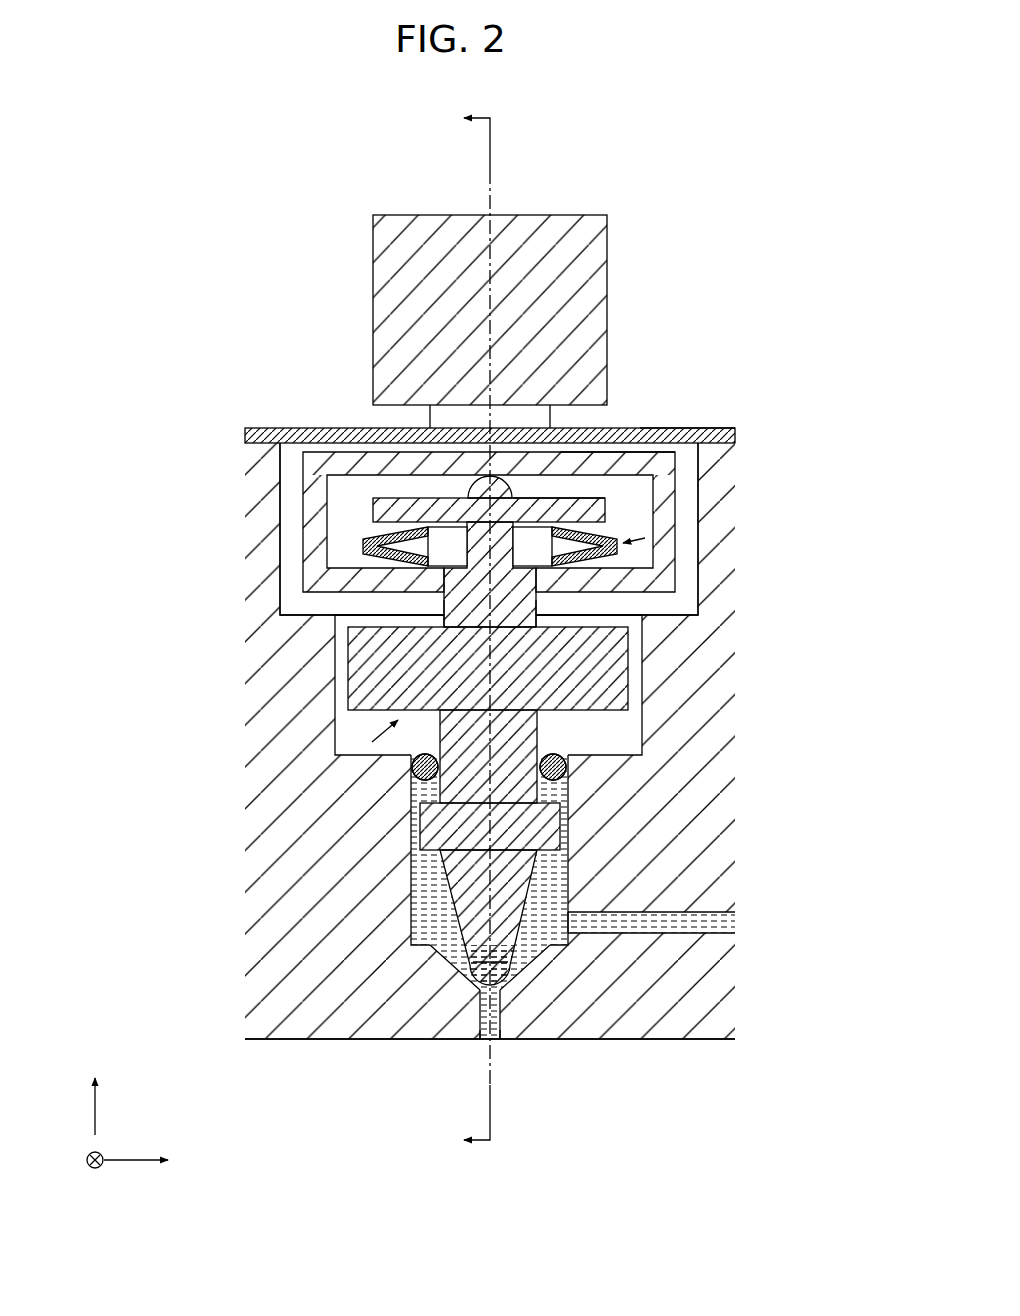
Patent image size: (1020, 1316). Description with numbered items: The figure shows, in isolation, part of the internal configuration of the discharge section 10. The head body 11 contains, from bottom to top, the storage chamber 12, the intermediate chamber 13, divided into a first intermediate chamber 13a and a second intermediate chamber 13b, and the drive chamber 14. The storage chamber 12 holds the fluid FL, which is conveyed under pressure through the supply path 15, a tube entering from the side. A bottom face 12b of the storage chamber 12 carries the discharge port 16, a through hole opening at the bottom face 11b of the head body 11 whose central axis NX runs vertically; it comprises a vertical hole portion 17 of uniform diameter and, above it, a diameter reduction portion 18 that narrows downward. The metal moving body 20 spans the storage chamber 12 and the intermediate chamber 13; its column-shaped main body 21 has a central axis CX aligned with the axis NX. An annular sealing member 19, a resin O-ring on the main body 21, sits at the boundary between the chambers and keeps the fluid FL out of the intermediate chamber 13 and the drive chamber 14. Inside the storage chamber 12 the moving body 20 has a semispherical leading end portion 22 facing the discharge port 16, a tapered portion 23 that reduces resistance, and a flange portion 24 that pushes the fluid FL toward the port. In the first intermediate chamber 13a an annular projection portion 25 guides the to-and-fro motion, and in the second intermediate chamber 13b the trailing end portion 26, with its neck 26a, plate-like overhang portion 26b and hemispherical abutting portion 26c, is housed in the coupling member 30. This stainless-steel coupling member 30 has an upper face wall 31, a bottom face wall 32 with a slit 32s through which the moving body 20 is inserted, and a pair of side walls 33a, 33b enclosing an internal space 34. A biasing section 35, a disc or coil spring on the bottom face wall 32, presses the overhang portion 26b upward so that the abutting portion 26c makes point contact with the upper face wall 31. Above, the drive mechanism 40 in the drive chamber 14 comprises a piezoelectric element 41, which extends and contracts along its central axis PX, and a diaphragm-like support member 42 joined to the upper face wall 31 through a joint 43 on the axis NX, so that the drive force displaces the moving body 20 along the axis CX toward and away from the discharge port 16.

The discharge section 10 is at (123, 212).
The head body 11 is at (298, 1013).
The bottom face 11b is at (298, 1039).
The storage chamber 12 is at (413, 900).
The bottom face 12b is at (567, 928).
The intermediate chamber 13 is at (485, 597).
The first intermediate chamber 13a is at (340, 718).
The second intermediate chamber 13b is at (290, 497).
The drive chamber 14 is at (448, 400).
The supply path 15 is at (745, 923).
The discharge port 16 is at (489, 1036).
The vertical hole portion 17 is at (472, 1035).
The diameter reduction portion 18 is at (463, 980).
The sealing member 19 is at (412, 800).
The moving body 20 is at (413, 760).
The main body 21 is at (512, 775).
The leading end portion 22 is at (505, 988).
The tapered portion 23 is at (520, 870).
The flange portion 24 is at (533, 813).
The projection portion 25 is at (605, 662).
The trailing end portion 26 is at (689, 397).
The neck 26a is at (697, 428).
The overhang portion 26b is at (585, 457).
The abutting portion 26c is at (555, 503).
The coupling member 30 is at (690, 478).
The upper face wall 31 is at (330, 433).
The bottom face wall 32 is at (360, 583).
The slit 32s is at (405, 623).
The side wall 33a is at (355, 543).
The side wall 33b is at (660, 522).
The internal space 34 is at (360, 526).
The biasing section 35 is at (645, 538).
The drive mechanism 40 is at (448, 403).
The piezoelectric element 41 is at (383, 297).
The support member 42 is at (476, 474).
The joint 43 is at (505, 447).
The central axis PX is at (492, 205).
The central axis CX is at (505, 740).
The central axis NX is at (495, 1062).
The fluid FL is at (425, 943).